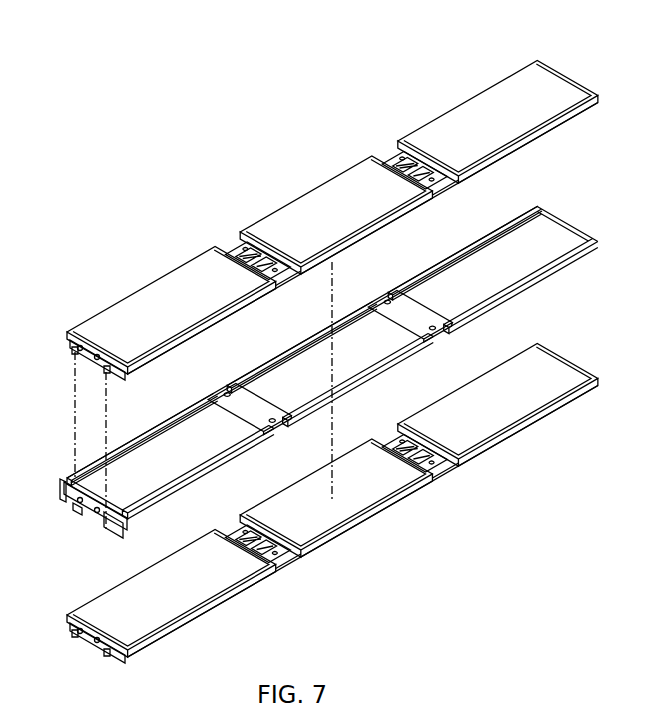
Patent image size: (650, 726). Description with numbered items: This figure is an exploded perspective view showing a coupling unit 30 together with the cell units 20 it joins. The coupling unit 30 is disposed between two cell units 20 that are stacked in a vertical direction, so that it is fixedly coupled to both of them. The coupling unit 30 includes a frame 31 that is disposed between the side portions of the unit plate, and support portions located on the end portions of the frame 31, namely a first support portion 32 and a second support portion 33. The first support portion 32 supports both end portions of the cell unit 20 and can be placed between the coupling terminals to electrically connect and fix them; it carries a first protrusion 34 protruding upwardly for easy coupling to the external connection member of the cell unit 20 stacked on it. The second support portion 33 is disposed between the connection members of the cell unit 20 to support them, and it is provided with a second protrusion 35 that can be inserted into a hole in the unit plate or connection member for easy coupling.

The cell unit 20 is at (576, 72).
The coupling unit 30 is at (313, 368).
The frame 31 is at (117, 449).
The first support portion 32 is at (78, 513).
The second support portion 33 is at (263, 403).
The first protrusion 34 is at (98, 515).
The second protrusion 35 is at (432, 312).